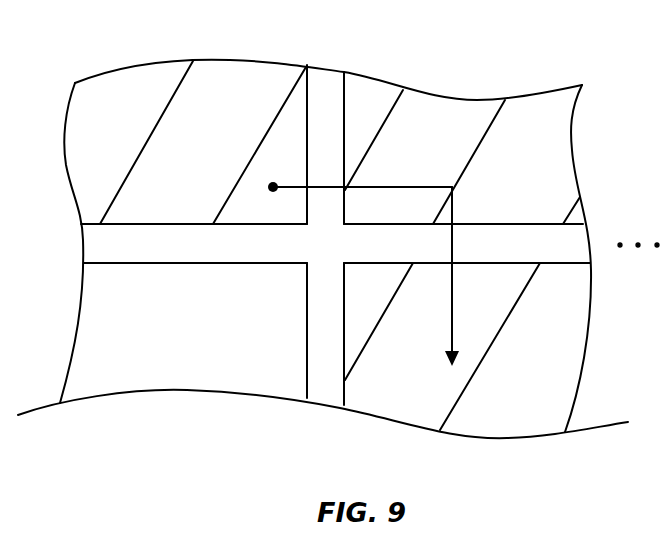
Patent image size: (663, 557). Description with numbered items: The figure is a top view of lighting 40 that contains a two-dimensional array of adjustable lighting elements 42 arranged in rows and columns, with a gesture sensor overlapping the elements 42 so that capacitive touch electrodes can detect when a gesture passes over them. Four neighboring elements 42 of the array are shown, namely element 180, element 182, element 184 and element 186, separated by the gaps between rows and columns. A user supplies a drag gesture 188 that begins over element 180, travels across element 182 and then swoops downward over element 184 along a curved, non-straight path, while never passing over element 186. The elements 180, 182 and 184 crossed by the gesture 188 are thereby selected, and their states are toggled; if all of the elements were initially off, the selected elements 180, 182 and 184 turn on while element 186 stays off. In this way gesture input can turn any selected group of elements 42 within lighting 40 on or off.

The lighting 40 is at (540, 62).
The elements 42 is at (92, 205).
The element 180 is at (224, 74).
The element 182 is at (452, 113).
The element 184 is at (418, 420).
The element 186 is at (190, 383).
The gesture 188 is at (453, 295).